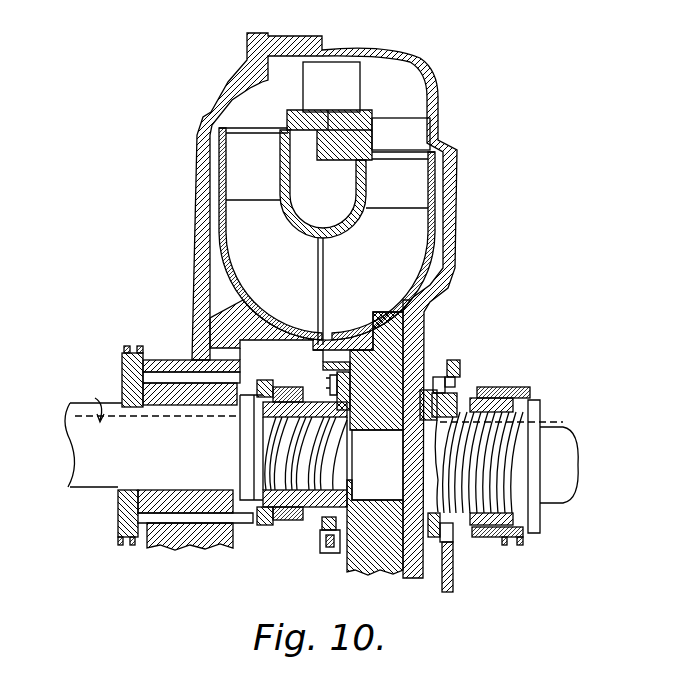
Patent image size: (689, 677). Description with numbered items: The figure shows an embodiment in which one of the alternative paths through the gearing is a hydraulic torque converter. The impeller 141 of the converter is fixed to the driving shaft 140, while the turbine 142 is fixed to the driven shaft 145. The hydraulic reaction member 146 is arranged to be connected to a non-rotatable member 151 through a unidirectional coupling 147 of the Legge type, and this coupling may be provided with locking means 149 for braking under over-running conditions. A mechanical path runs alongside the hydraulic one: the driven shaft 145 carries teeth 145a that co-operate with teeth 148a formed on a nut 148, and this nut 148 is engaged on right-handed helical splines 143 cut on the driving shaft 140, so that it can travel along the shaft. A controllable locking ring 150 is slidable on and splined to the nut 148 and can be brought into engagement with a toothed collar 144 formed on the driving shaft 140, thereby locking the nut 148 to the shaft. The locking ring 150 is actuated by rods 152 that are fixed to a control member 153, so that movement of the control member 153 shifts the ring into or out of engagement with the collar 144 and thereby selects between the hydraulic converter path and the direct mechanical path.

The driving shaft 140 is at (68, 407).
The impeller 141 is at (222, 186).
The turbine 142 is at (428, 219).
The right-handed helical splines 143 is at (272, 455).
The toothed collar 144 is at (240, 423).
The driven shaft 145 is at (563, 433).
The teeth 145a is at (320, 538).
The hydraulic reaction member 146 is at (228, 87).
The unidirectional coupling 147 is at (442, 360).
The nut 148 is at (298, 512).
The teeth 148a is at (337, 549).
The locking means 149 is at (490, 390).
The controllable locking ring 150 is at (293, 385).
The non-rotatable member 151 is at (454, 586).
The rods 152 is at (173, 381).
The control member 153 is at (128, 545).